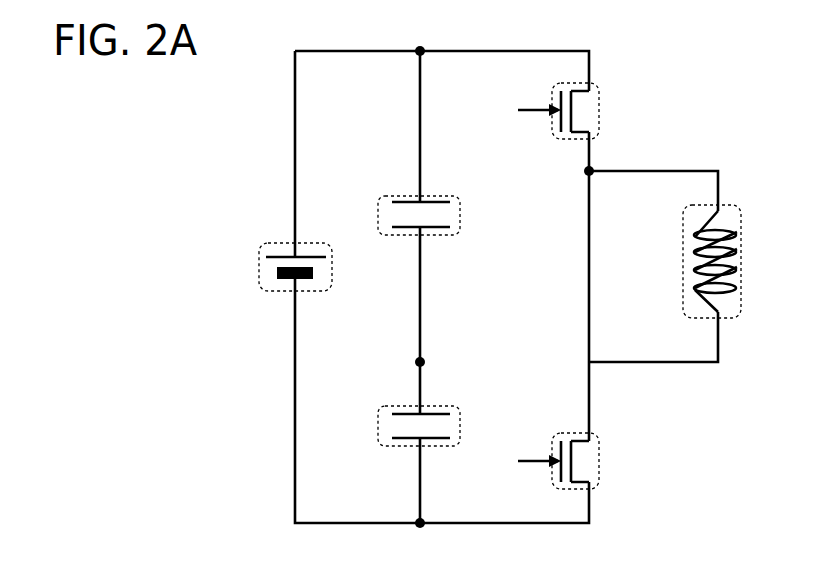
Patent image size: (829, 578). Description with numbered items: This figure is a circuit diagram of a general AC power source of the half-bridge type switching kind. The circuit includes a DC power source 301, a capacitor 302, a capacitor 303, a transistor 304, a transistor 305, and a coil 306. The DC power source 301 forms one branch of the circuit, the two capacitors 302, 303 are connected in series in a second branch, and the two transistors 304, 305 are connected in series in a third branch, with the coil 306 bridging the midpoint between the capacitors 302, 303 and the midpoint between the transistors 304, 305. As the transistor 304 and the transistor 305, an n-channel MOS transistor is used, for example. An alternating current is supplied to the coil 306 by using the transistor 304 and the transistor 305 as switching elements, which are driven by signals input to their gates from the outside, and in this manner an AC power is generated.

The DC power source 301 is at (259, 262).
The capacitor 302 is at (387, 195).
The capacitor 303 is at (387, 405).
The transistor 304 is at (600, 109).
The transistor 305 is at (600, 460).
The coil 306 is at (682, 257).